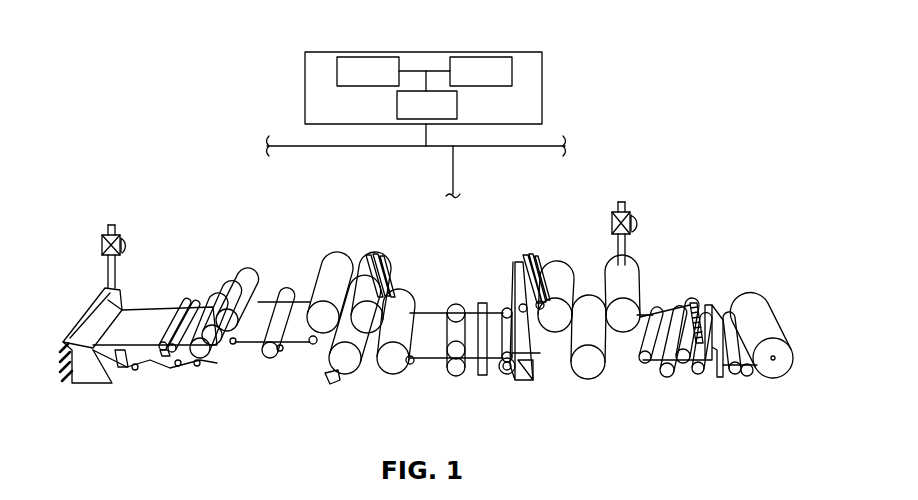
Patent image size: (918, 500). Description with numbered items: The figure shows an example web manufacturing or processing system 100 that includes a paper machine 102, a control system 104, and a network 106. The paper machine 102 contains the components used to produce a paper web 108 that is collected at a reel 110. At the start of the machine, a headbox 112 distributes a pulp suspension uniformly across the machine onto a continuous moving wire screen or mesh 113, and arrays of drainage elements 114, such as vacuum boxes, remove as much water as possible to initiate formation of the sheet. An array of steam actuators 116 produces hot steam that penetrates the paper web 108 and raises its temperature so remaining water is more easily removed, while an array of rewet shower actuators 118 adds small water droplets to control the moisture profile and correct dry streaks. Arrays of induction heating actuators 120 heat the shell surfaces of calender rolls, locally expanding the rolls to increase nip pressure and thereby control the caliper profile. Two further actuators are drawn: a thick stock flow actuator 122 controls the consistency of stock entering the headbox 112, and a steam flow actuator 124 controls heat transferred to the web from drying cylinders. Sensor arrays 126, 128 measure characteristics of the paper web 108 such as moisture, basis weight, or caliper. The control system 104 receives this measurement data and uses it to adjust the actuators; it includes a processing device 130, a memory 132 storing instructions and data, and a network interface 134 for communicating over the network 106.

The web manufacturing or processing system 100 is at (201, 104).
The paper machine 102 is at (256, 227).
The control system 104 is at (542, 90).
The network 106 is at (331, 146).
The paper web 108 is at (238, 345).
The reel 110 is at (767, 380).
The headbox 112 is at (83, 312).
The wire screen or mesh 113 is at (136, 370).
The drainage elements 114 is at (217, 363).
The steam actuators 116 is at (328, 380).
The rewet shower actuators 118 is at (528, 257).
The induction heating actuators 120 is at (703, 377).
The thick stock flow actuator 122 is at (120, 289).
The steam flow actuator 124 is at (628, 212).
The sensor array 126 is at (482, 376).
The sensor array 128 is at (710, 305).
The processing device 130 is at (353, 83).
The memory 132 is at (466, 83).
The network interface 134 is at (412, 116).